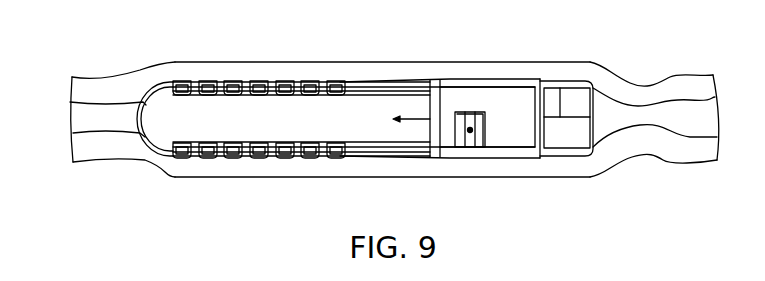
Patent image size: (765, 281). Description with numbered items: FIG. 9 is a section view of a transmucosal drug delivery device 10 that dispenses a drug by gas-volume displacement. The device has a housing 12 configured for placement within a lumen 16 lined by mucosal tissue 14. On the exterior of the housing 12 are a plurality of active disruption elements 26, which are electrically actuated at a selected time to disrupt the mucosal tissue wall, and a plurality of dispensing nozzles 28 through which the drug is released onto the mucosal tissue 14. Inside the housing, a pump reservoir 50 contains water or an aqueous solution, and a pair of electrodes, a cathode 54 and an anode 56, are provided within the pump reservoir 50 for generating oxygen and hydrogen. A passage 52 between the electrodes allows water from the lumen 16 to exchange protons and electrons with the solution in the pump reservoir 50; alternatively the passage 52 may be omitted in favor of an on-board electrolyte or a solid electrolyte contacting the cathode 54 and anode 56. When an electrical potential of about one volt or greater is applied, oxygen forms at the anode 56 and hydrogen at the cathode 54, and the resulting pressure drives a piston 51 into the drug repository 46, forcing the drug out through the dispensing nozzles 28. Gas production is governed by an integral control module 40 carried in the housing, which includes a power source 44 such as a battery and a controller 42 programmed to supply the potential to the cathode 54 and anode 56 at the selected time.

The transmucosal drug delivery device 10 is at (493, 83).
The housing 12 is at (155, 150).
The mucosal tissue 14 is at (127, 91).
The lumen 16 is at (608, 117).
The active disruption elements 26 is at (236, 81).
The dispensing nozzles 28 is at (274, 81).
The control module 40 is at (552, 97).
The controller 42 is at (573, 97).
The power source 44 is at (567, 138).
The drug repository 46 is at (350, 108).
The pump reservoir 50 is at (480, 100).
The piston 51 is at (435, 92).
The passage 52 is at (473, 130).
The cathode 54 is at (461, 140).
The anode 56 is at (481, 140).